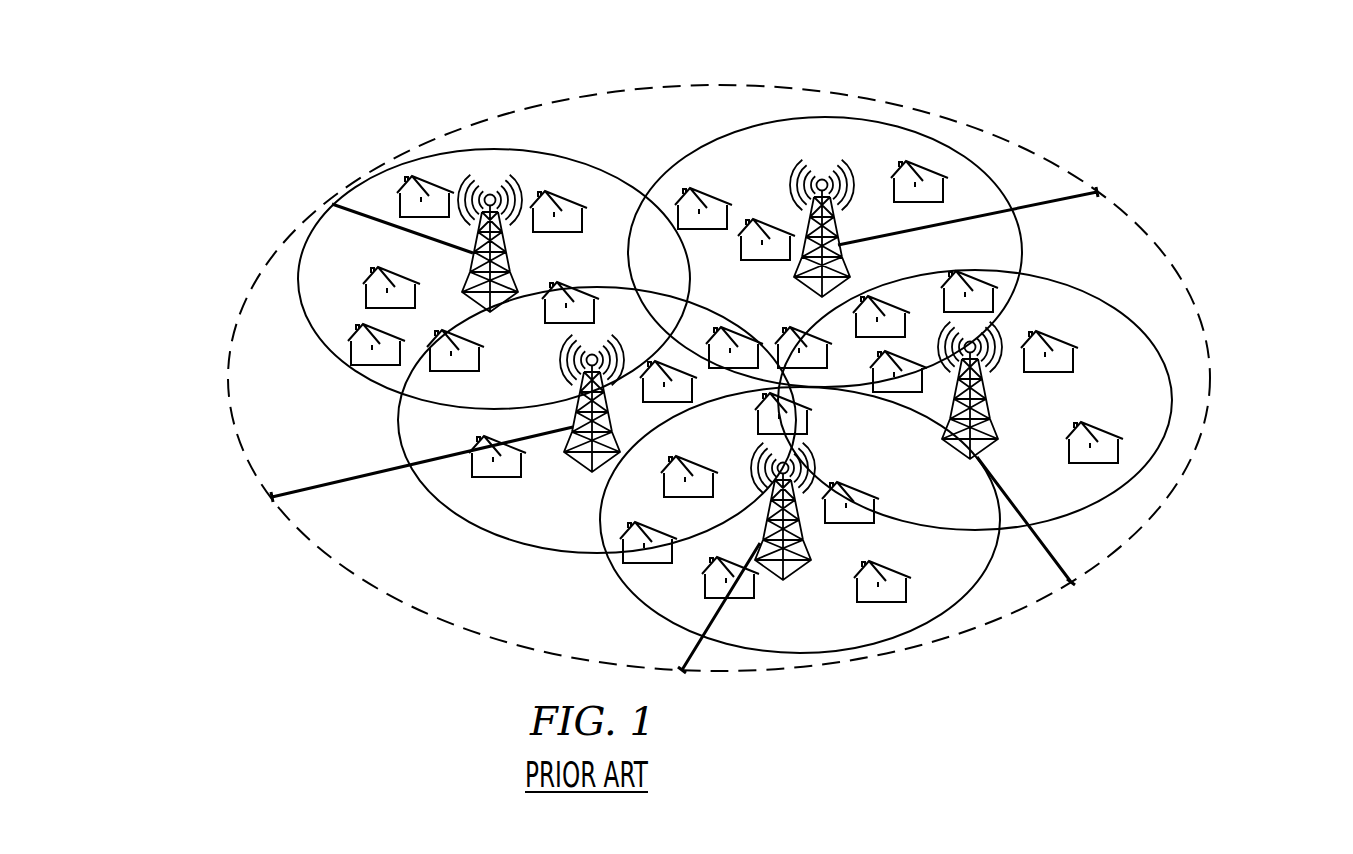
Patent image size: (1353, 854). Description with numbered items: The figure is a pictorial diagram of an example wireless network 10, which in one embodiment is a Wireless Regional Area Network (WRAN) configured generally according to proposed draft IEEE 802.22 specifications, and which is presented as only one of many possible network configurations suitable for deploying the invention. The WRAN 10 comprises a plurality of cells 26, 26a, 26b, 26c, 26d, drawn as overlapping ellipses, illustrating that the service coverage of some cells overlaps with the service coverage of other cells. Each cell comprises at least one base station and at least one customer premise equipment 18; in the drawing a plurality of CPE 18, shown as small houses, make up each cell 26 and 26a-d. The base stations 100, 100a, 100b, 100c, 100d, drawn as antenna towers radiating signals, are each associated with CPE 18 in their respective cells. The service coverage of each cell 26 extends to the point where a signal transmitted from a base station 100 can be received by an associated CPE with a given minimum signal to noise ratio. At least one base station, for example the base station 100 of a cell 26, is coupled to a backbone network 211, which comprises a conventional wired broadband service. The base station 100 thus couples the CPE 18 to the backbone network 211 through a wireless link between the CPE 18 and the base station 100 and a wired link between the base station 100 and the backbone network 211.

The wireless network 10 is at (310, 92).
The customer premise equipment 18 is at (357, 328).
The cell 26 is at (450, 509).
The cell 26a is at (300, 292).
The cell 26b is at (947, 146).
The cell 26c is at (1130, 320).
The cell 26d is at (912, 630).
The base station 100 is at (578, 470).
The base station 100a is at (490, 194).
The base station 100b is at (822, 179).
The base station 100c is at (997, 417).
The base station 100d is at (788, 588).
The backbone network 211 is at (1120, 209).